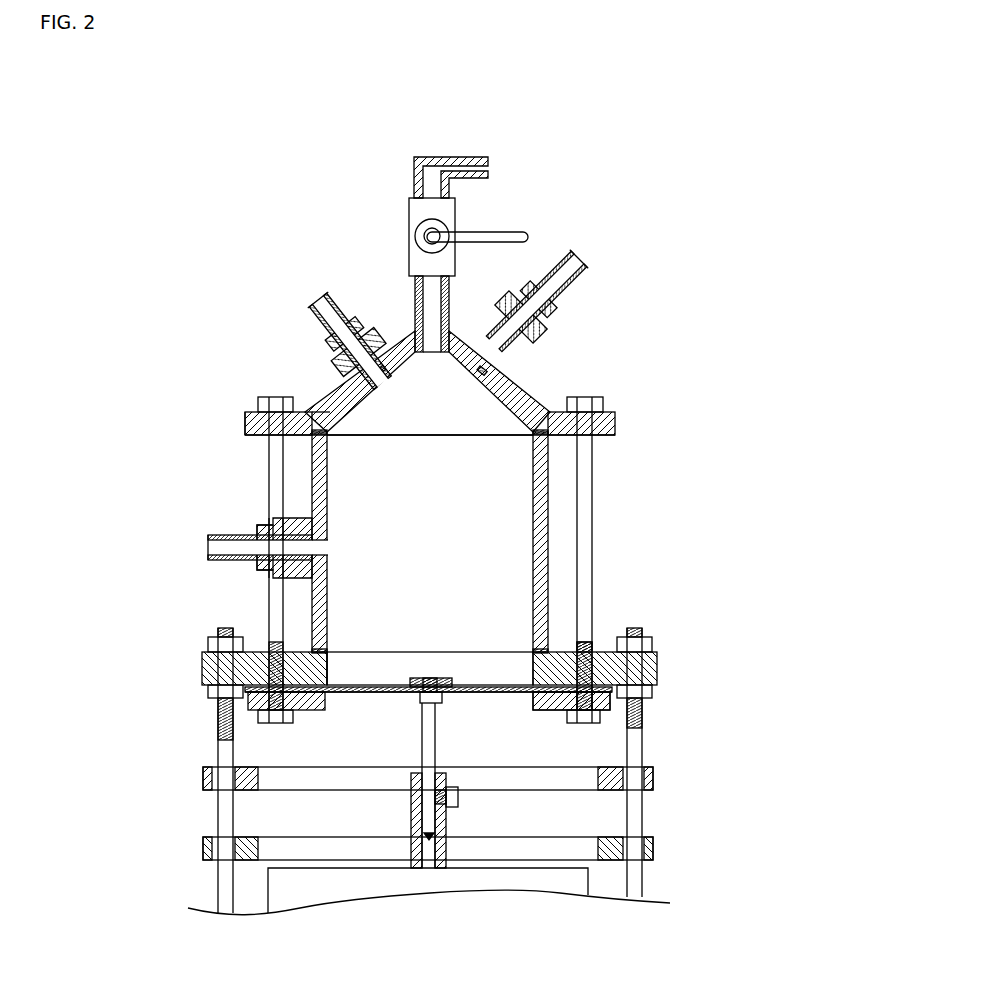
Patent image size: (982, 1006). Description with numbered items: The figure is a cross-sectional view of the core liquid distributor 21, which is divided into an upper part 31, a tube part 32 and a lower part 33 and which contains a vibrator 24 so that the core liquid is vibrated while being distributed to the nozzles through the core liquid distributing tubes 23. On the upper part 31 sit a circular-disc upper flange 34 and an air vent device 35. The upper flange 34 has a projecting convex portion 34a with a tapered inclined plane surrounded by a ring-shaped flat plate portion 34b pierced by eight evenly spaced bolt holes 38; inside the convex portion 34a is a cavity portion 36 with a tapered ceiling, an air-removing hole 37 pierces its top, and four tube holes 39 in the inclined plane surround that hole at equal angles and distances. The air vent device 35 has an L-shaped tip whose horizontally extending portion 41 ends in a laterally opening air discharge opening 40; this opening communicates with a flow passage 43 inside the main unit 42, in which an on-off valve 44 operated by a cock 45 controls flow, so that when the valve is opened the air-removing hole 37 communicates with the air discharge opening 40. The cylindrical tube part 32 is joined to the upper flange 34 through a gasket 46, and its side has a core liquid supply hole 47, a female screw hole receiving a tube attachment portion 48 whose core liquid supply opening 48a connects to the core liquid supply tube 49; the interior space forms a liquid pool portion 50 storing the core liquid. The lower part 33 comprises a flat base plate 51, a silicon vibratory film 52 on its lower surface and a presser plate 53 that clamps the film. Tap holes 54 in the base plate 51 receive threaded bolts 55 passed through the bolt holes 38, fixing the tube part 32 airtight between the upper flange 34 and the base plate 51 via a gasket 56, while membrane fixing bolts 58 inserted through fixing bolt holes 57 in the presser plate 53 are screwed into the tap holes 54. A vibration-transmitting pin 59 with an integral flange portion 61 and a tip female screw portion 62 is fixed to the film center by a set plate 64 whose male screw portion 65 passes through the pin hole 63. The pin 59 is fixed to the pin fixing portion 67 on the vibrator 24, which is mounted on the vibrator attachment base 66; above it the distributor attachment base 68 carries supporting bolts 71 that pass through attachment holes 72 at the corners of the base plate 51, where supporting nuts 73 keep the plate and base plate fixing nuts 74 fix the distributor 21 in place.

The core liquid distributor 21 is at (690, 332).
The core liquid distributing tubes 23 is at (307, 308).
The vibrator 24 is at (571, 885).
The upper part 31 is at (528, 390).
The tube part 32 is at (550, 543).
The lower part 33 is at (658, 675).
The upper flange 34 is at (612, 420).
The convex portion 34a is at (340, 395).
The flat plate portion 34b is at (247, 422).
The air vent device 35 is at (408, 210).
The cavity portion 36 is at (417, 431).
The air-removing hole 37 is at (429, 349).
The bolt holes 38 is at (585, 445).
The tube holes 39 is at (384, 374).
The air discharge opening 40 is at (488, 170).
The extending portion 41 is at (477, 156).
The main unit 42 is at (452, 285).
The flow passage 43 is at (430, 293).
The on-off valve 44 is at (442, 217).
The cock 45 is at (528, 238).
The gasket 46 is at (330, 437).
The core liquid supply hole 47 is at (322, 550).
The tube attachment portion 48 is at (290, 517).
The core liquid supply opening 48a is at (262, 540).
The core liquid supply tube 49 is at (212, 560).
The liquid pool portion 50 is at (430, 540).
The base plate 51 is at (203, 668).
The vibratory film 52 is at (500, 693).
The presser plate 53 is at (555, 710).
The tap holes 54 is at (597, 645).
The threaded bolts 55 is at (592, 481).
The gasket 56 is at (338, 655).
The fixing bolt holes 57 is at (607, 720).
The membrane fixing bolts 58 is at (580, 723).
The pin 59 is at (420, 753).
The flange portion 61 is at (440, 703).
The female screw portion 62 is at (412, 700).
The pin hole 63 is at (428, 678).
The set plate 64 is at (440, 692).
The male screw portion 65 is at (410, 682).
The vibrator attachment base 66 is at (653, 850).
The pin fixing portion 67 is at (447, 827).
The distributor attachment base 68 is at (653, 779).
The supporting bolts 71 is at (642, 750).
The attachment holes 72 is at (652, 645).
The supporting nuts 73 is at (652, 694).
The base plate fixing nuts 74 is at (640, 629).